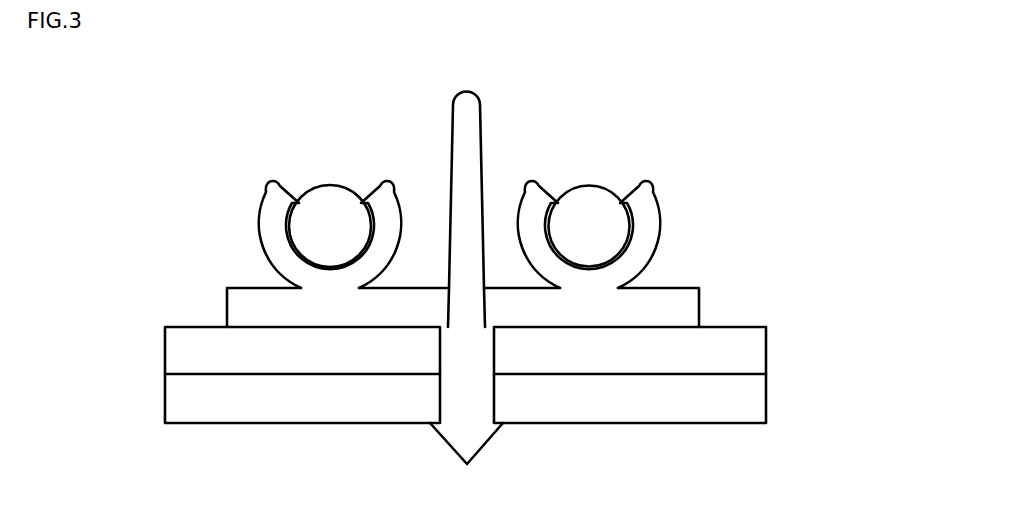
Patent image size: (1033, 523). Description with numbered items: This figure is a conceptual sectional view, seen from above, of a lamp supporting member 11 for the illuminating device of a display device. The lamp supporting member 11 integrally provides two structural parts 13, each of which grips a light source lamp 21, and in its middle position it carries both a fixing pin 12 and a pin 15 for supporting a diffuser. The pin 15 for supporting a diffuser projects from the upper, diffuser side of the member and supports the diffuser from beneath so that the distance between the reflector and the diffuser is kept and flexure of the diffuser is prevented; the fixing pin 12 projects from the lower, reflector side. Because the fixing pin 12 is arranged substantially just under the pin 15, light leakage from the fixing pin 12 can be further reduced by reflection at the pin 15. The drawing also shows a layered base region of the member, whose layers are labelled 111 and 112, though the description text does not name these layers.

The lamp supporting member 11 is at (677, 313).
The lower layer of base 111 is at (748, 403).
The upper layer of base 112 is at (748, 347).
The fixing pin 12 is at (465, 444).
The structural part for gripping a light source lamp 13 is at (642, 212).
The pin for supporting a diffuser 15 is at (467, 178).
The light source lamp 21 is at (588, 222).